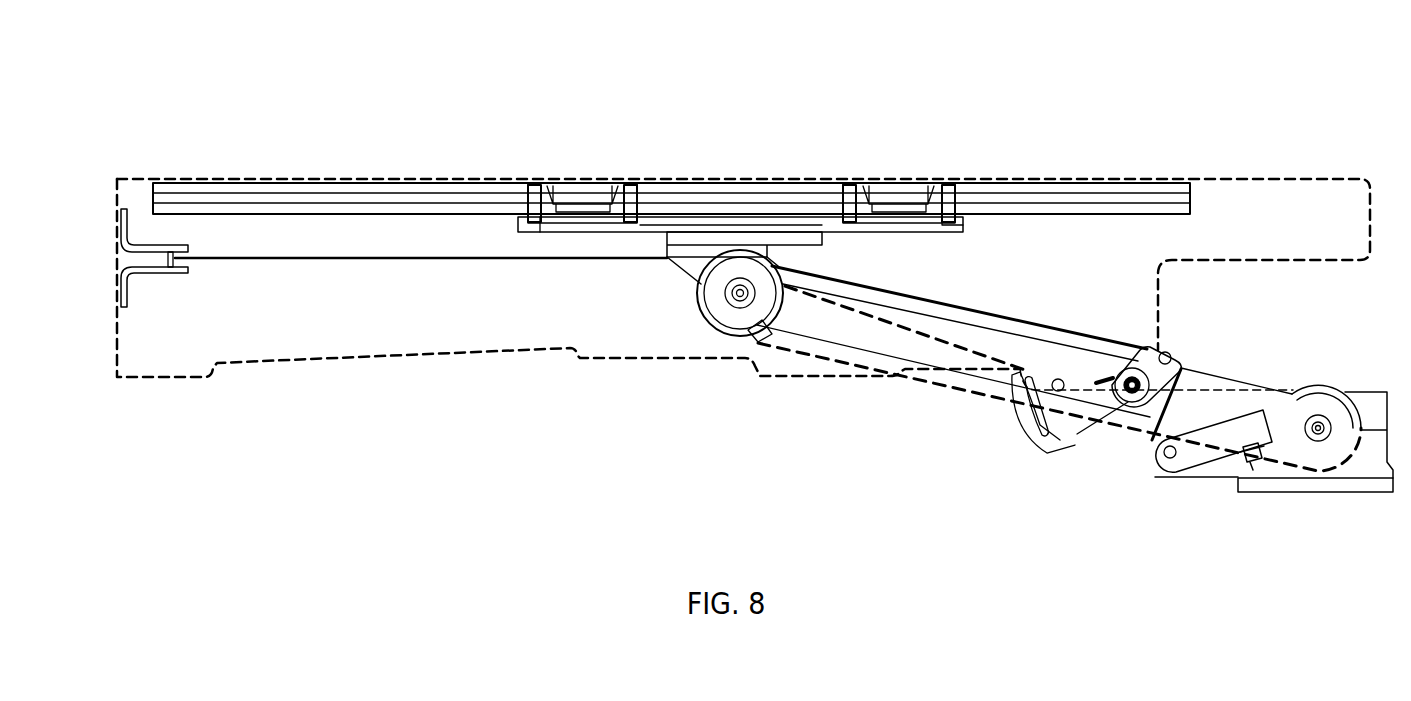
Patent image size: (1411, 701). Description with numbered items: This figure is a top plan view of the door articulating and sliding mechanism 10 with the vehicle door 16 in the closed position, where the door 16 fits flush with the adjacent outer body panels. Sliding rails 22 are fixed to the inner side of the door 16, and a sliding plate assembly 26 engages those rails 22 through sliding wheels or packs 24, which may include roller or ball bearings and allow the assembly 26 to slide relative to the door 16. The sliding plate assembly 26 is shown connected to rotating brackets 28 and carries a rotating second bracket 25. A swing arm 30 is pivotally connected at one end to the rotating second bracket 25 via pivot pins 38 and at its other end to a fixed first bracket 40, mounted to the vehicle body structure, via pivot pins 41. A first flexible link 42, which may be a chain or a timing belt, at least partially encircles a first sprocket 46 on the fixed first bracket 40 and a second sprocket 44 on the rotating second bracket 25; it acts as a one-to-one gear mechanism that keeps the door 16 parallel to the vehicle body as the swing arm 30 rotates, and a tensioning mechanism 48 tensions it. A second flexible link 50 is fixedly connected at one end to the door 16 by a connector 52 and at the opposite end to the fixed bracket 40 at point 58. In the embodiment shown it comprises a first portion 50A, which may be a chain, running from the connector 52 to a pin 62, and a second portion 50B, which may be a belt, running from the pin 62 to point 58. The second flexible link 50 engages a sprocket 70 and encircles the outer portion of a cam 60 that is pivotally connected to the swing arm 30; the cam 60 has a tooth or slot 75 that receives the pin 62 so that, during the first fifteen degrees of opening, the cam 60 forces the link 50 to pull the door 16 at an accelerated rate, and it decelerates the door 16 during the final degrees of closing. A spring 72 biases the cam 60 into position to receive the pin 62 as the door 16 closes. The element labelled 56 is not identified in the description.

The door articulating and sliding mechanism 10 is at (250, 95).
The vehicle door 16 is at (1243, 178).
The sliding rails 22 is at (1040, 200).
The sliding wheels or packs 24 is at (578, 193).
The rotating second bracket 25 is at (800, 247).
The sliding plate assembly 26 is at (845, 230).
The rotating brackets 28 is at (690, 270).
The swing arm 30 is at (960, 382).
The pivot pins 38 is at (738, 290).
The fixed first bracket 40 is at (1370, 492).
The pivot pins 41 is at (1320, 440).
The first flexible link 42 is at (1120, 440).
The second sprocket 44 is at (712, 328).
The first sprocket 46 is at (1322, 388).
The tensioning mechanism 48 is at (1020, 435).
The second flexible link 50 is at (955, 300).
The first portion 50A is at (387, 258).
The second portion 50B is at (1228, 395).
The connector 52 is at (172, 272).
The pivot 56 is at (1140, 462).
The point 58 is at (1250, 468).
The cam 60 is at (1145, 360).
The pin 62 is at (1168, 352).
The sprocket 70 is at (745, 350).
The spring 72 is at (1100, 378).
The tooth or slot 75 is at (1182, 366).